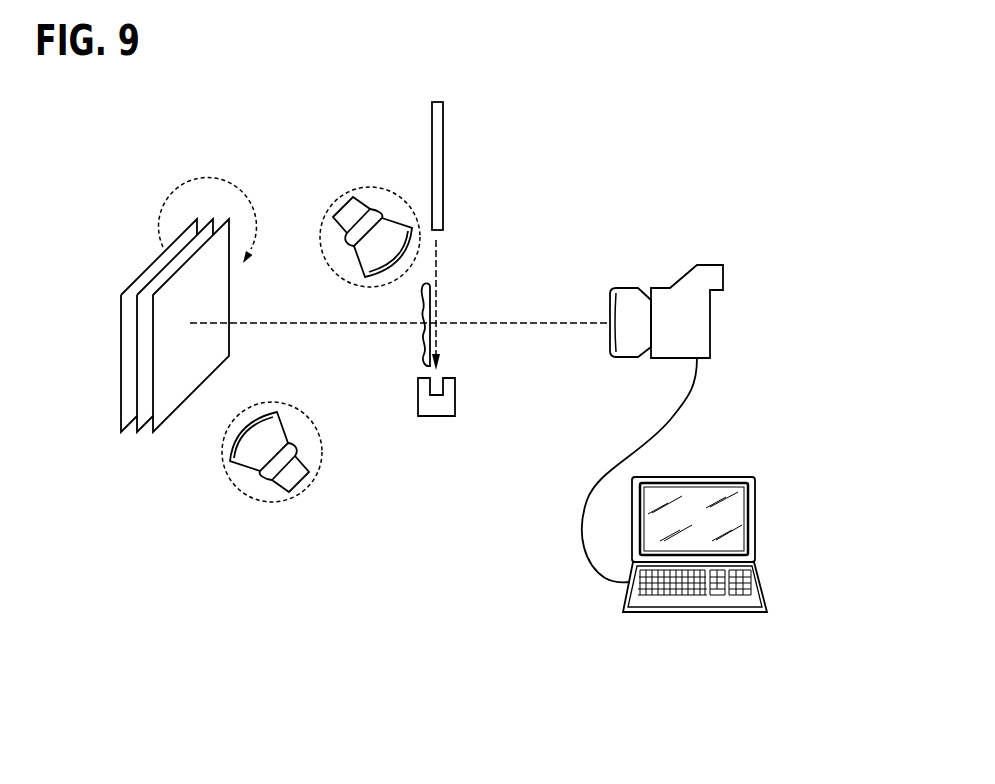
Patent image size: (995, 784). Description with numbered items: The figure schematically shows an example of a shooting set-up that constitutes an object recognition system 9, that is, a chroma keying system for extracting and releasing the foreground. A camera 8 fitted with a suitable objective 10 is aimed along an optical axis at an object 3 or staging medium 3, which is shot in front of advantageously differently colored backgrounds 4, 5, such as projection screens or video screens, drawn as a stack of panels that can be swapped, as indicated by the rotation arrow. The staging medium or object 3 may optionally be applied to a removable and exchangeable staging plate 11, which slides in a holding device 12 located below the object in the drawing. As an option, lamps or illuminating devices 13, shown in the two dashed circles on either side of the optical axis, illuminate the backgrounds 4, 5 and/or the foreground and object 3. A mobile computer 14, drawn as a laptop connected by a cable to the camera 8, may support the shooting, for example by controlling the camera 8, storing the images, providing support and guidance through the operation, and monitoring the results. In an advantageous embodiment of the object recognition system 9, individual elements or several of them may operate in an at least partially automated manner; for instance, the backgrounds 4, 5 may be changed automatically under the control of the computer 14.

The object / staging medium 3 is at (420, 352).
The background 4 is at (172, 413).
The background 5 is at (143, 432).
The camera 8 is at (692, 315).
The object recognition system 9 is at (729, 186).
The objective 10 is at (630, 300).
The staging plate 11 is at (437, 170).
The holding device 12 is at (428, 416).
The lamps / illuminating devices 13 is at (370, 188).
The computer 14 is at (755, 513).